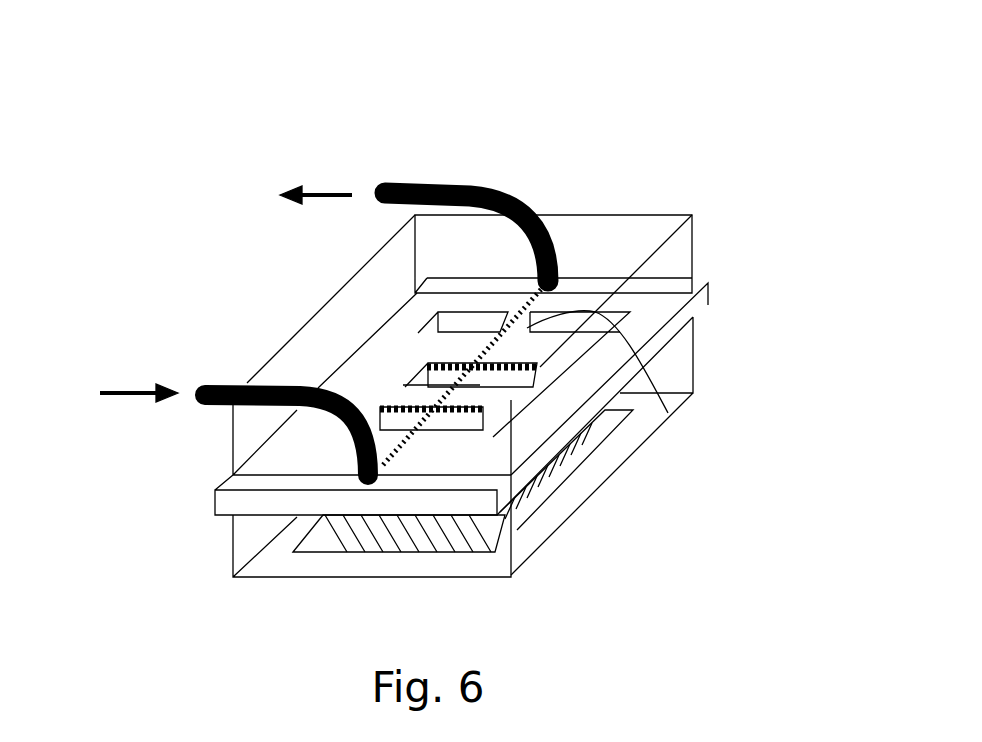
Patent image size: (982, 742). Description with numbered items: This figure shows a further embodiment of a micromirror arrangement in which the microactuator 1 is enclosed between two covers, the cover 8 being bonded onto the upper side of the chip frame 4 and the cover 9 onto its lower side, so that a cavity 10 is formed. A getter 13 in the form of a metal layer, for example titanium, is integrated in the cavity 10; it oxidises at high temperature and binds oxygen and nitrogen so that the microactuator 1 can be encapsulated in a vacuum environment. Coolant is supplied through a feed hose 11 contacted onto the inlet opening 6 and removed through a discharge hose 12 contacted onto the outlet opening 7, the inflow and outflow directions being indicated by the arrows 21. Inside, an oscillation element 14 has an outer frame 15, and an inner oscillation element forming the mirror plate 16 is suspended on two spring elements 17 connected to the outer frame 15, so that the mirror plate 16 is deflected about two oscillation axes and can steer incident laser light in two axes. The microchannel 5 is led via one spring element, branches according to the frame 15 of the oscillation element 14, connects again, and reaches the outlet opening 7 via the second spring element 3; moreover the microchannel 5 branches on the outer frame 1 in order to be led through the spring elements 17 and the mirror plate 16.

The microactuator 1 is at (217, 500).
The second spring element 3 is at (668, 413).
The chip frame 4 is at (568, 430).
The microchannel 5 is at (440, 365).
The inlet opening 6 is at (387, 484).
The outlet opening 7 is at (562, 282).
The cover 8 is at (692, 247).
The cover 9 is at (693, 358).
The cavity 10 is at (318, 378).
The feed hose 11 is at (233, 417).
The discharge hose 12 is at (440, 186).
The getter 13 is at (327, 537).
The oscillation element 14 is at (408, 392).
The outer frame 15 is at (583, 320).
The mirror plate 16 is at (416, 388).
The spring elements 17 is at (596, 334).
The arrows 21 is at (312, 188).